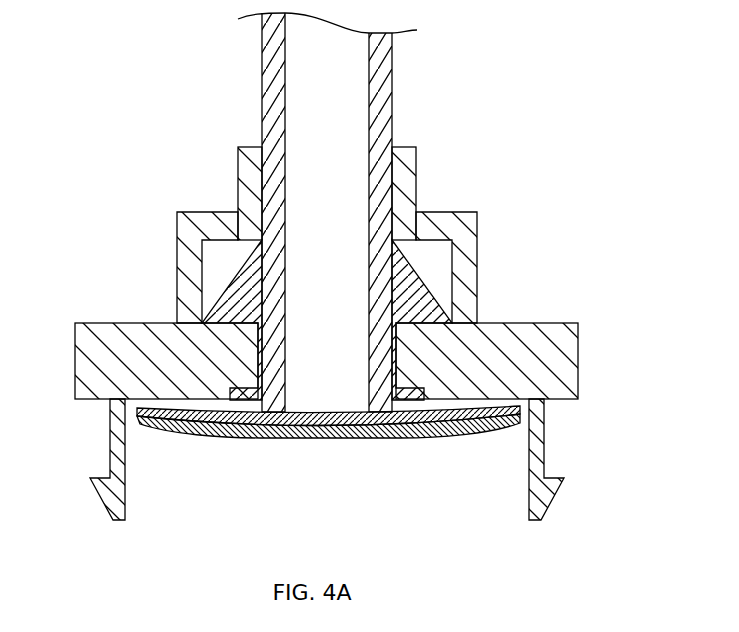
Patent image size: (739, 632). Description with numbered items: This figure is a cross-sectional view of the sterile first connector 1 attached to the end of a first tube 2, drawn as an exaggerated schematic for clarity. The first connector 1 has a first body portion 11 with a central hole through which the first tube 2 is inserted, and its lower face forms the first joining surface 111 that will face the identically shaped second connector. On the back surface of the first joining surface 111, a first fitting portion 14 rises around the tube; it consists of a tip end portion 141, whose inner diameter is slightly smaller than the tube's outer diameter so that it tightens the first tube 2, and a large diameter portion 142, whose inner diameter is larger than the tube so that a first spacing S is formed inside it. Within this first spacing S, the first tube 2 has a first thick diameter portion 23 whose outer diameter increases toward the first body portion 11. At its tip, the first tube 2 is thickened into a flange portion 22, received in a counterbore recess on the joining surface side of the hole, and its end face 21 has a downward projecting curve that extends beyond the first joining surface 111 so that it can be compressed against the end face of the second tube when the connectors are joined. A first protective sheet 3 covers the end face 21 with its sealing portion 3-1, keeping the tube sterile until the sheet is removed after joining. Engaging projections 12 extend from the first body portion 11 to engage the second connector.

The first connector 1 is at (617, 296).
The first tube 2 is at (392, 83).
The first protective sheet 3 is at (328, 466).
The sealing portion 3-1 is at (308, 440).
The first body portion 11 is at (578, 362).
The engaging projection 12 is at (103, 503).
The first fitting portion 14 is at (407, 226).
The tip end portion 141 is at (413, 178).
The large diameter portion 142 is at (382, 261).
The end face 21 is at (273, 440).
The flange portion 22 is at (242, 437).
The first thick diameter portion 23 is at (410, 300).
The first joining surface 111 is at (515, 428).
The first spacing S is at (215, 257).